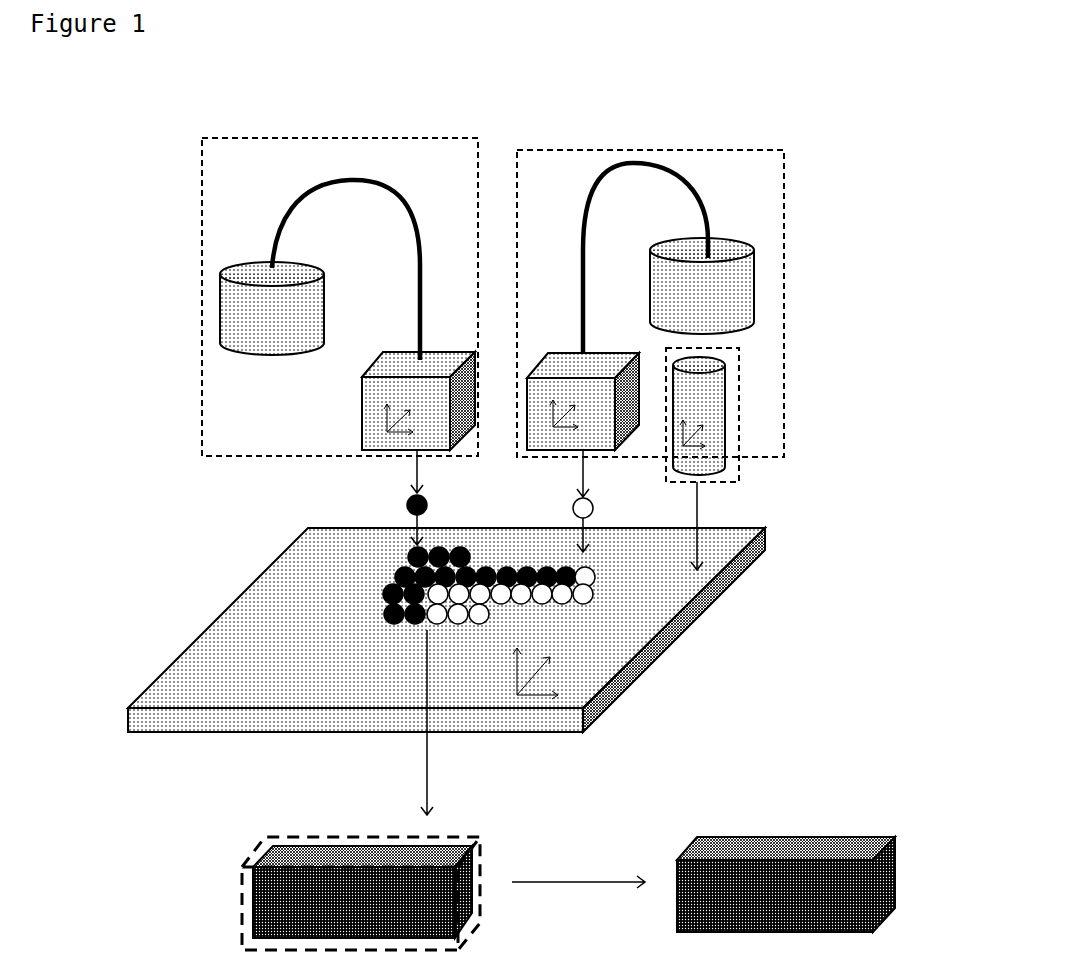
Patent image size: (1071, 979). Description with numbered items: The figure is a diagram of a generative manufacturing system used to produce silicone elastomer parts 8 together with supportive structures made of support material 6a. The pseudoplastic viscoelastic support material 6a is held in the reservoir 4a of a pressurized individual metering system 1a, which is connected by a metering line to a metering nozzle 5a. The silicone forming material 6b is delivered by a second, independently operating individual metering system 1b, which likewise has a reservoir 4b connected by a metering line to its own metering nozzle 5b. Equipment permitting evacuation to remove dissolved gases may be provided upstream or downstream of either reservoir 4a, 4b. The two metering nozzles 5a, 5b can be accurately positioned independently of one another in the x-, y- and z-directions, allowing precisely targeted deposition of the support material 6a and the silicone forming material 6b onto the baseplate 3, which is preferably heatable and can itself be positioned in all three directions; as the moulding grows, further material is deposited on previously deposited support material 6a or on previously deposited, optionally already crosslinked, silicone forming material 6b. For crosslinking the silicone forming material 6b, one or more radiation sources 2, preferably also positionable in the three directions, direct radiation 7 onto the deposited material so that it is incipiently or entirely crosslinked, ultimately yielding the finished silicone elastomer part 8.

The individual metering system 1a is at (784, 228).
The individual metering system 1b is at (202, 298).
The radiation source 2 is at (739, 413).
The baseplate 3 is at (446, 630).
The reservoir 4a is at (668, 258).
The reservoir 4b is at (320, 270).
The metering nozzle 5a is at (583, 353).
The metering nozzle 5b is at (362, 413).
The support material (sm) 6a is at (457, 838).
The silicone forming material (sfm) 6b is at (397, 575).
The radiation 7 is at (697, 520).
The silicone elastomer part 8 is at (783, 895).